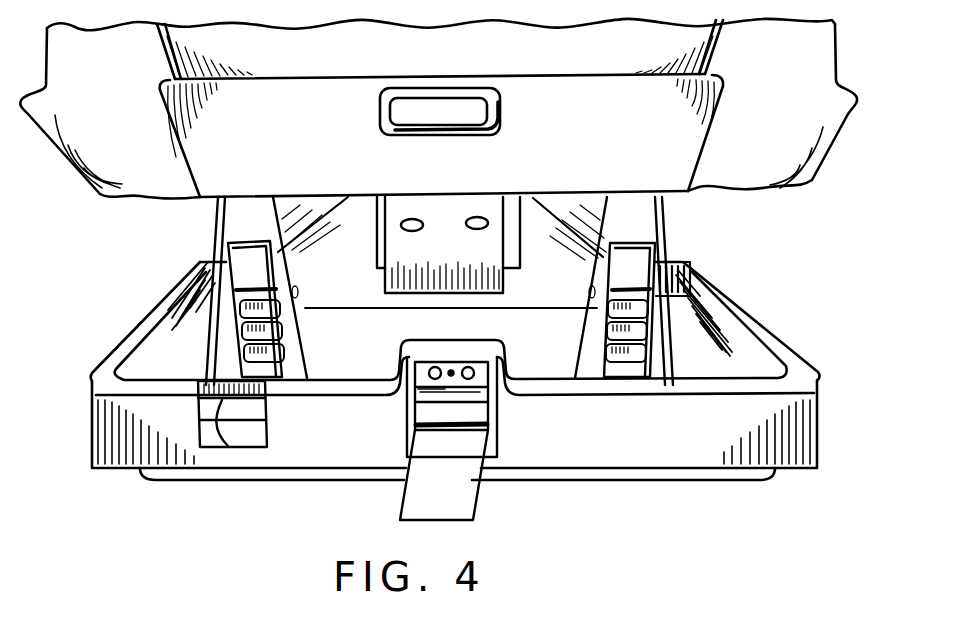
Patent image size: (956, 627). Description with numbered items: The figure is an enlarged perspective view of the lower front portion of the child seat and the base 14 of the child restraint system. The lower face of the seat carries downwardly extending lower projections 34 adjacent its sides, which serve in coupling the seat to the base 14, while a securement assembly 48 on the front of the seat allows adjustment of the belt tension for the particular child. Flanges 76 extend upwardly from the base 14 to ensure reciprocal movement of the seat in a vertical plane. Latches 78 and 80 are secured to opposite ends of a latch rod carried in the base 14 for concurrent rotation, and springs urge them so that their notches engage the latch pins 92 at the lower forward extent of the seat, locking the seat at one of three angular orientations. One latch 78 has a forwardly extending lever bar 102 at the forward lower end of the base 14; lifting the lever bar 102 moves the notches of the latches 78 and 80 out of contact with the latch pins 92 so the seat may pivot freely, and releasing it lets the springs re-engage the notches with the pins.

The base 14 is at (122, 467).
The lower projections 34 is at (228, 216).
The securement assembly 48 is at (497, 418).
The flanges 76 is at (203, 378).
The latch 78 is at (174, 318).
The latch 80 is at (640, 308).
The latch pins 92 is at (645, 282).
The lever bar 102 is at (213, 450).